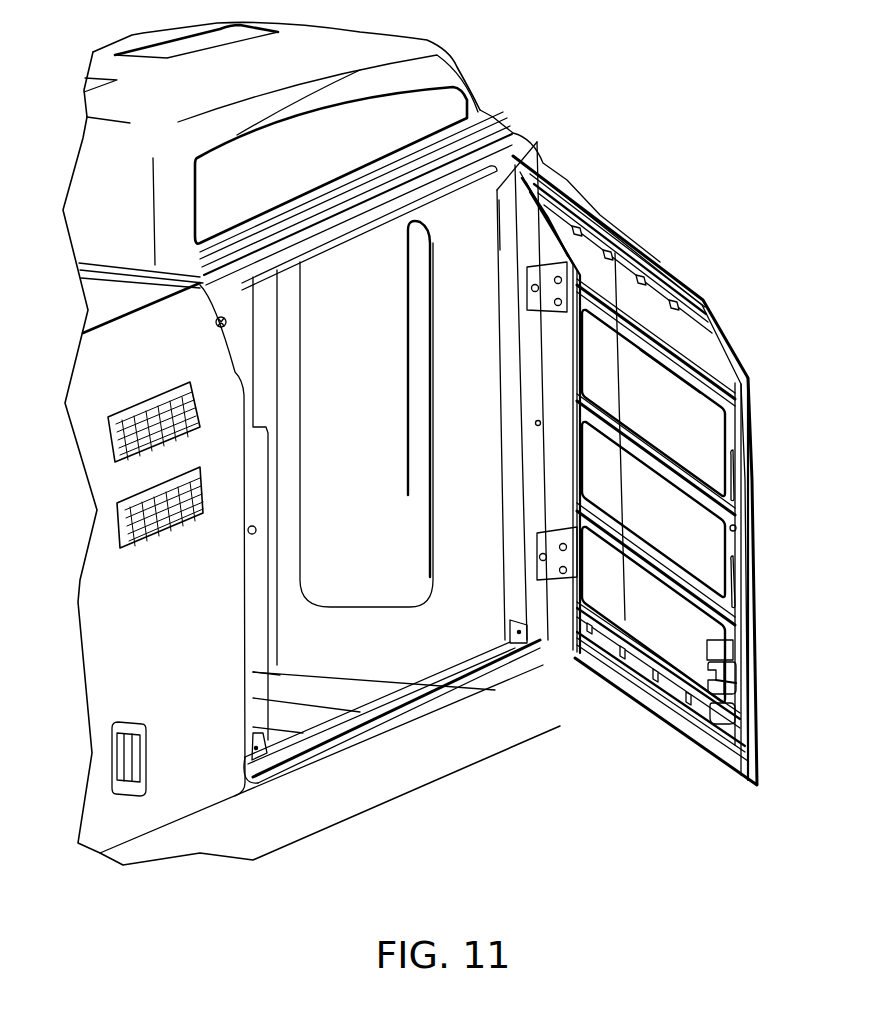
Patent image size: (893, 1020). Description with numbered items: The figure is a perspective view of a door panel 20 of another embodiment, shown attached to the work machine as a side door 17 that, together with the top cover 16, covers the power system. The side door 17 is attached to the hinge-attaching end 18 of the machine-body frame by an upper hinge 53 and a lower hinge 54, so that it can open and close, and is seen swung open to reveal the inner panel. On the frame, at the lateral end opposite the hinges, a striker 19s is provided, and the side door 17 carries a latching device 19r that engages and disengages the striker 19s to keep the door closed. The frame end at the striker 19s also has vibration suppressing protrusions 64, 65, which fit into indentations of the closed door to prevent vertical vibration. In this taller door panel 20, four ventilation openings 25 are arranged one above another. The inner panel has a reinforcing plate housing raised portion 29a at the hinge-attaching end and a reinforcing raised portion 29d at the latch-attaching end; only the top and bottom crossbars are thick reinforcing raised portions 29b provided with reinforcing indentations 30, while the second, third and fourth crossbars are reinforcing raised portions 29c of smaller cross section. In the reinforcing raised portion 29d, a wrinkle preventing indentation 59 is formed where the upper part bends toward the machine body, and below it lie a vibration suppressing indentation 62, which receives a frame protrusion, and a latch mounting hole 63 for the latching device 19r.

The top cover 16 is at (398, 44).
The side door 17 is at (547, 176).
The hinge-attaching end 18 is at (518, 213).
The hinge 53 is at (547, 238).
The reinforcing plate housing raised portion 29a is at (582, 268).
The reinforcing raised portion 29b is at (638, 260).
The reinforcing indentation 30 is at (670, 300).
The door panel 20 is at (706, 302).
The ventilation opening 25 is at (667, 333).
The reinforcing raised portion 29c is at (703, 390).
The reinforcing raised portion 29d is at (740, 424).
The wrinkle preventing indentation 59 is at (718, 398).
The vibration suppressing indentation 62 is at (736, 527).
The latching device 19r is at (736, 683).
The latch mounting hole 63 is at (726, 724).
The hinge 54 is at (562, 576).
The vibration suppressing protrusion 64 is at (213, 323).
The vibration suppressing protrusion 65 is at (250, 527).
The striker 19s is at (270, 680).